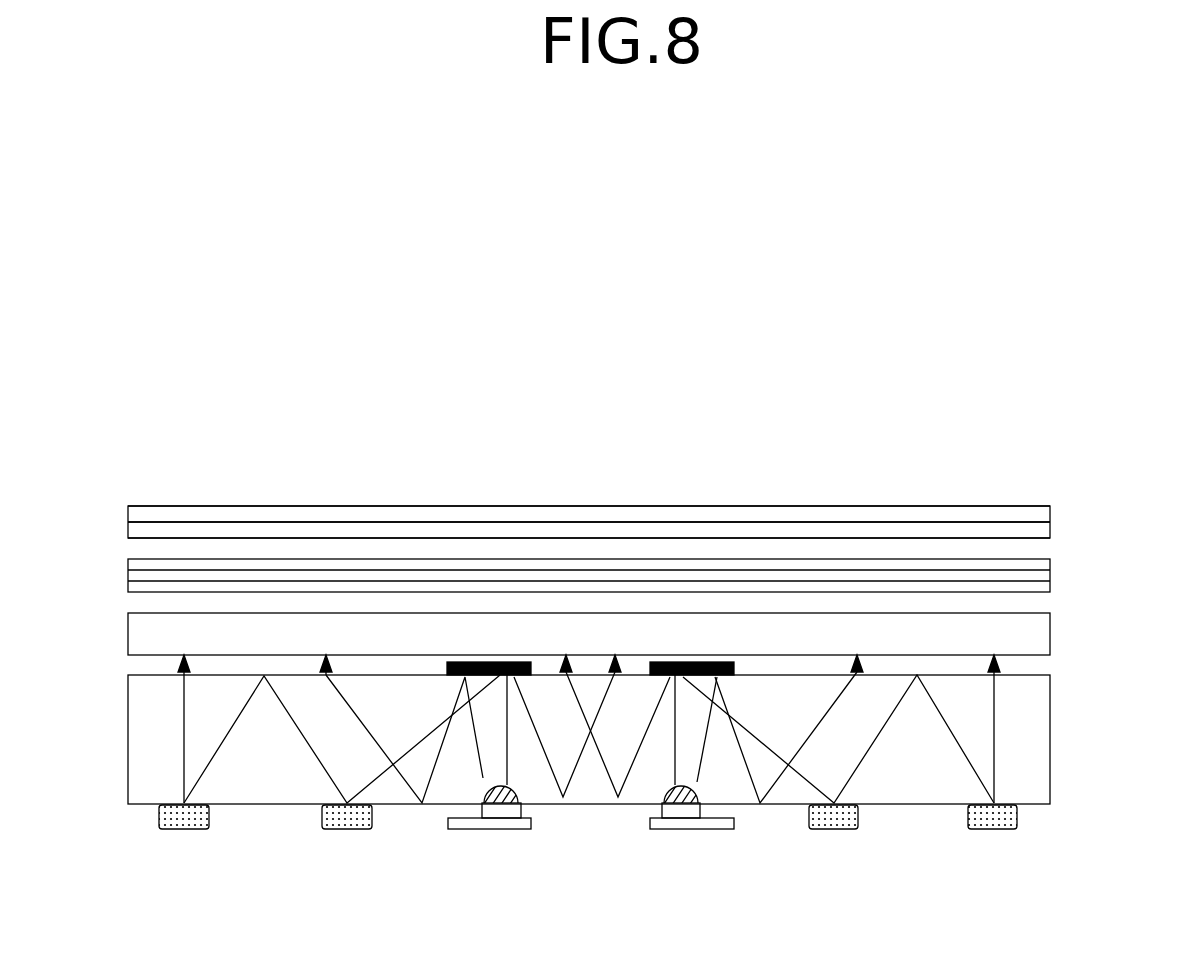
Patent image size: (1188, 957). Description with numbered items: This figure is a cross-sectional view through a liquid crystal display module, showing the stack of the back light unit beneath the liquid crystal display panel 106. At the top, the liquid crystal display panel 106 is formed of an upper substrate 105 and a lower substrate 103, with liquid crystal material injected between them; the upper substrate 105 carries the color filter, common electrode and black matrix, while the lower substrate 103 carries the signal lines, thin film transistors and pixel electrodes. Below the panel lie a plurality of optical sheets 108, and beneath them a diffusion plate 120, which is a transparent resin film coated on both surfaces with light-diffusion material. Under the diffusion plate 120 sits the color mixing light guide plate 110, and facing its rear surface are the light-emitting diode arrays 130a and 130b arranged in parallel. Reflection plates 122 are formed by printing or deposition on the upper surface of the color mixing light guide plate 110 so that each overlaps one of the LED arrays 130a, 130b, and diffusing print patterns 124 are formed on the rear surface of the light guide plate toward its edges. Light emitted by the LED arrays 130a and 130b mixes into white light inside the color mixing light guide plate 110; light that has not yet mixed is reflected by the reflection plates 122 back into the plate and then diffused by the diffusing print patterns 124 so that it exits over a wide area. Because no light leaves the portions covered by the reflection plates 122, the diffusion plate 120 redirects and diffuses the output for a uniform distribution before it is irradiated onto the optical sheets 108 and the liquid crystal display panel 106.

The liquid crystal display panel 106 is at (577, 372).
The upper substrate 105 is at (494, 515).
The lower substrate 103 is at (538, 535).
The optical sheets 108 is at (1044, 563).
The diffusion plate 120 is at (1043, 637).
The color mixing light guide plate 110 is at (1043, 728).
The reflection plates 122 is at (470, 661).
The diffusing print patterns 124 is at (856, 829).
The light-emitting diode array 130a is at (490, 829).
The light-emitting diode array 130b is at (712, 829).